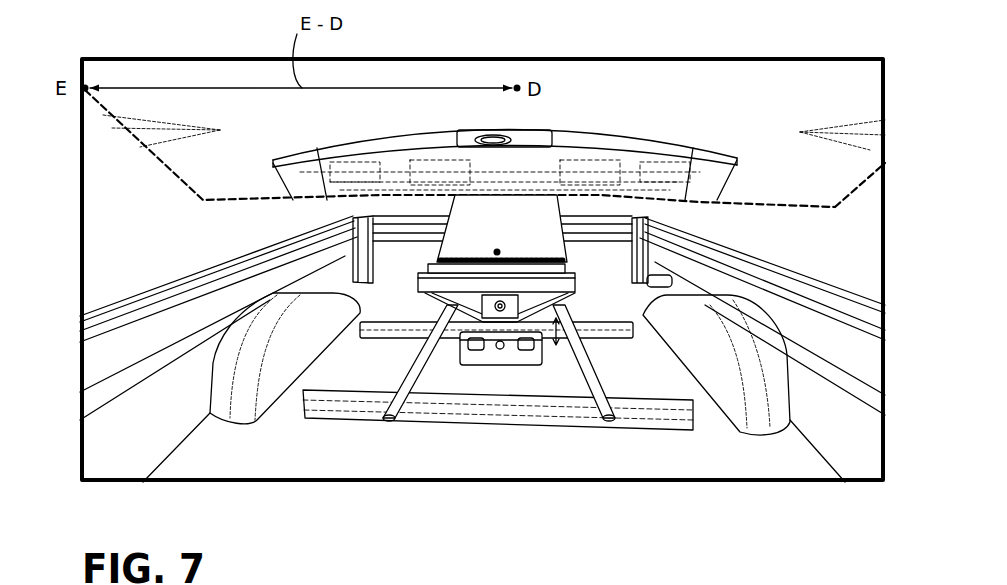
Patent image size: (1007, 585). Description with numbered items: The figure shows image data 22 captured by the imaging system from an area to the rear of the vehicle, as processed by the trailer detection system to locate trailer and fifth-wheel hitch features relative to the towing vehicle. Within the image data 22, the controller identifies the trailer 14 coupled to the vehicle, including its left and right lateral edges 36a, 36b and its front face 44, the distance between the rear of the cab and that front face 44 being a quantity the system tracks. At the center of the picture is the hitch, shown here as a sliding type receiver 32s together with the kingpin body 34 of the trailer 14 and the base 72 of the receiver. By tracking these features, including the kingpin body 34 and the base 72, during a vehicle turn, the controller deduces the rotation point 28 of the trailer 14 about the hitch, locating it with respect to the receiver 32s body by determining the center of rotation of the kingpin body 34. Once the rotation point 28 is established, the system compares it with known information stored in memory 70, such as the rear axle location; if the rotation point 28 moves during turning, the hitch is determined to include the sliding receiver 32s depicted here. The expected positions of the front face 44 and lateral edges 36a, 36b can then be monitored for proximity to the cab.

The trailer 14 is at (553, 95).
The image data 22 is at (66, 366).
The rotation point 28 is at (500, 252).
The sliding type receiver 32s is at (491, 368).
The kingpin body 34 is at (380, 240).
The left lateral edge 36a is at (90, 96).
The right lateral edge 36b is at (878, 166).
The front face 44 is at (712, 120).
The memory 70 is at (463, 318).
The base 72 is at (490, 337).